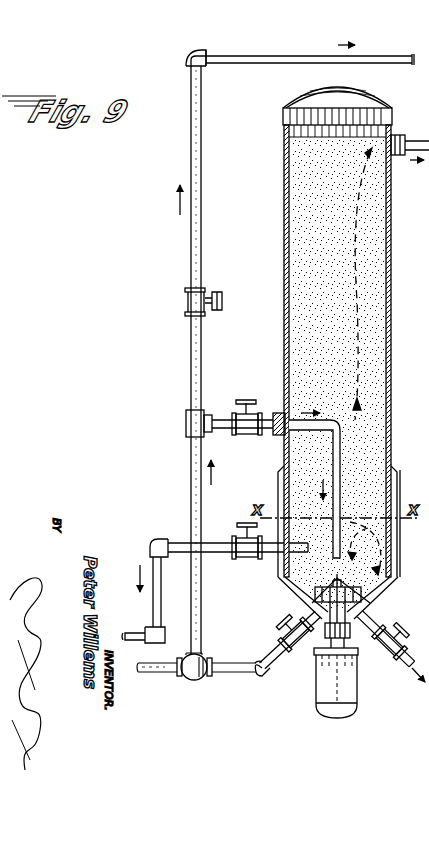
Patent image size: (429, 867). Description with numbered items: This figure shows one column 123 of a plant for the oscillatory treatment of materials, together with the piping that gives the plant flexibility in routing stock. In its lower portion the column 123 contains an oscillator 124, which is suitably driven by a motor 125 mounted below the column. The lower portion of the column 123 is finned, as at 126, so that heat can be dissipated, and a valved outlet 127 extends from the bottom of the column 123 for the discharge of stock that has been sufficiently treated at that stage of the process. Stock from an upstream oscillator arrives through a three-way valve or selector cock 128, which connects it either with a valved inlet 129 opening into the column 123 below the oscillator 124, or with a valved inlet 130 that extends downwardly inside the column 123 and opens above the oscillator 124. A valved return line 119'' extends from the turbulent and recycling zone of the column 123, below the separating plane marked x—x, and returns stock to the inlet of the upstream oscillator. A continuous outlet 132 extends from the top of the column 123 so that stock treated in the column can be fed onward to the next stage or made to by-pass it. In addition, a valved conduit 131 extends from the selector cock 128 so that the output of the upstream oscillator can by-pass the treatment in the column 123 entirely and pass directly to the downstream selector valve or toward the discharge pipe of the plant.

The valved return line 119'' is at (215, 567).
The column 123 is at (284, 130).
The oscillator 124 is at (284, 586).
The motor 125 is at (351, 712).
The fins 126 is at (312, 597).
The valved outlet 127 is at (392, 652).
The three-way valve or selector cock 128 is at (193, 681).
The valved inlet 129 is at (292, 654).
The valved inlet 130 is at (247, 436).
The valved conduit 131 is at (295, 55).
The continuous outlet 132 is at (421, 139).